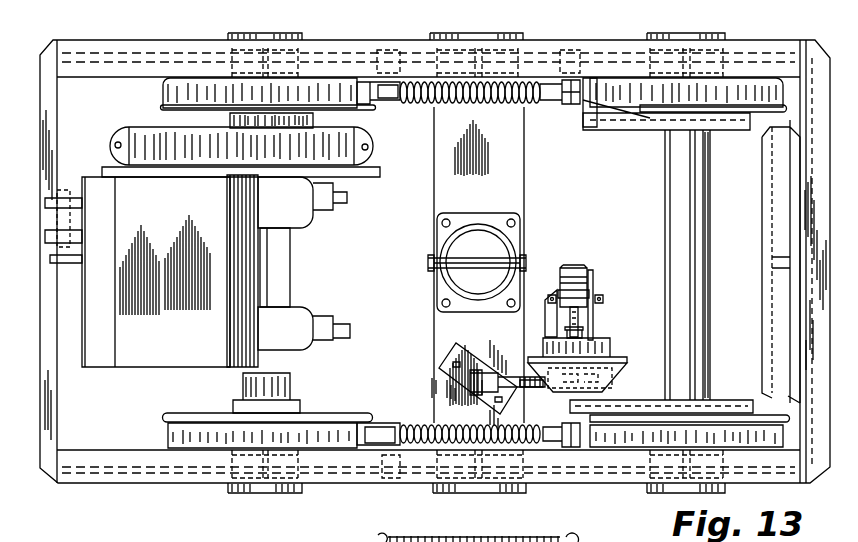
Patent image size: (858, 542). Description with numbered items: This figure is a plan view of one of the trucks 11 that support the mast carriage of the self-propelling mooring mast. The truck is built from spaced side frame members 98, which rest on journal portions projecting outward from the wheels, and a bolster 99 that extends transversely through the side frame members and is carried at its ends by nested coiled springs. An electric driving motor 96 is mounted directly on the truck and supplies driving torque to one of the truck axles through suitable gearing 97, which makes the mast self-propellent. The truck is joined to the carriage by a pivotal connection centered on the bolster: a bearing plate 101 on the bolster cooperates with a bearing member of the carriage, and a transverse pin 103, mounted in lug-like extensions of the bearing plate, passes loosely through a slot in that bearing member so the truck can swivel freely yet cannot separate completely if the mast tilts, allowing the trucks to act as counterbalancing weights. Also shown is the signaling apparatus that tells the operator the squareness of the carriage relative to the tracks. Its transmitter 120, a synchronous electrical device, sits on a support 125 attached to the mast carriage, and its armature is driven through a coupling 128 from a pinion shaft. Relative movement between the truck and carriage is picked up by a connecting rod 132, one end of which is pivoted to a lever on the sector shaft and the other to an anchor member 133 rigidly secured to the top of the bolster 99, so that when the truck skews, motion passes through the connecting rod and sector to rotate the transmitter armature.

The truck 11 is at (558, 478).
The electric driving motor 96 is at (130, 367).
The gearing 97 is at (170, 137).
The side frame member 98 is at (102, 45).
The bolster 99 is at (492, 218).
The bearing plate 101 is at (500, 248).
The transverse pin 103 is at (463, 260).
The transmitter 120 is at (577, 265).
The support 125 is at (598, 367).
The coupling 128 is at (578, 318).
The connecting rod 132 is at (522, 378).
The anchor member 133 is at (468, 385).